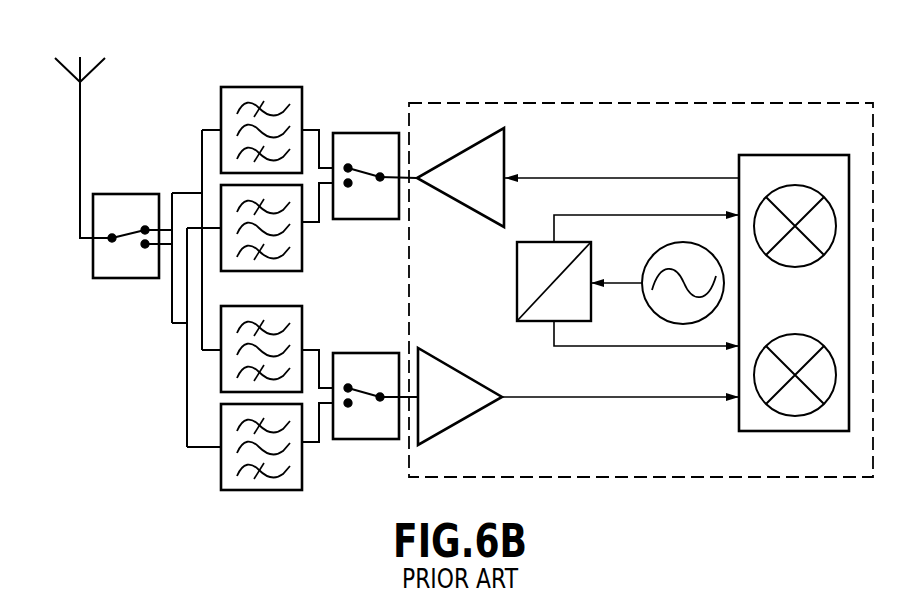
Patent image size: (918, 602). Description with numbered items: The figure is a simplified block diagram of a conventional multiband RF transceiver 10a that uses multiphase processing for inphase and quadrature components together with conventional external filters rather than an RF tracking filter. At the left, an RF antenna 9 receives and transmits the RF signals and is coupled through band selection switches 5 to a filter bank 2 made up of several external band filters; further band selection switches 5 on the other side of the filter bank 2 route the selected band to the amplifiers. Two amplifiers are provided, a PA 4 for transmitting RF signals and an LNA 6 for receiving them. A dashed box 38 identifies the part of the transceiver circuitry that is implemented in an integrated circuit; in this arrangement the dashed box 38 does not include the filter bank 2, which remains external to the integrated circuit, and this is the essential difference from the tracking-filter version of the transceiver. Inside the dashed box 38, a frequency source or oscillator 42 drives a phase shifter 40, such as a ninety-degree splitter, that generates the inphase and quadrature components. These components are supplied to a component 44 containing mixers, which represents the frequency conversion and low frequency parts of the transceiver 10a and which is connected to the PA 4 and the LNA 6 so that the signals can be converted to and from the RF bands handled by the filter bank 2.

The multiband transceiver system 10a is at (587, 82).
The RF antenna 9 is at (96, 66).
The band selection switches 5 is at (115, 193).
The filter bank 2 is at (250, 87).
The dashed box 38 is at (716, 103).
The PA 4 is at (505, 155).
The LNA 6 is at (487, 408).
The phase shifter 40 is at (591, 253).
The frequency source/oscillator 42 is at (673, 325).
The component with mixers 44 is at (772, 431).